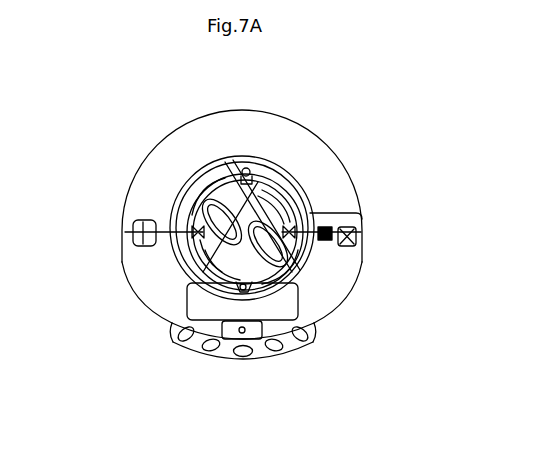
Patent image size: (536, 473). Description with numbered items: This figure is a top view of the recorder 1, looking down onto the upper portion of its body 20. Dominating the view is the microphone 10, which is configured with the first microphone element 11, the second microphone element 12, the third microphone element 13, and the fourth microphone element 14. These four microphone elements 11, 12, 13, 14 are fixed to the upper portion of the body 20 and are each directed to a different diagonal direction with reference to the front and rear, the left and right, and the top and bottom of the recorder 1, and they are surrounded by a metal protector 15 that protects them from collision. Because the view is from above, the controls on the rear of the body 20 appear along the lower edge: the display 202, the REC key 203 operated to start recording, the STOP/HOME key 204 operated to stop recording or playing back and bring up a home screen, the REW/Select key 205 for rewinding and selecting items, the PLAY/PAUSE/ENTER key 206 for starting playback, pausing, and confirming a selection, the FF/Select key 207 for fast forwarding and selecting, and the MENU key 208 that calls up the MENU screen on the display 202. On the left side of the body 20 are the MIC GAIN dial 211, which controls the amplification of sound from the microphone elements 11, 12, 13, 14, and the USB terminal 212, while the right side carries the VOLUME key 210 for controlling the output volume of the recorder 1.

The recorder 1 is at (254, 76).
The microphone 10 is at (283, 190).
The first microphone element 11 is at (200, 207).
The second microphone element 12 is at (278, 212).
The third microphone element 13 is at (210, 268).
The fourth microphone element 14 is at (262, 268).
The metal protector 15 is at (192, 180).
The body 20 is at (176, 131).
The display 202 is at (187, 295).
The REC key 203 is at (262, 324).
The STOP/HOME key 204 is at (175, 348).
The REW/Select key 205 is at (212, 353).
The PLAY/PAUSE/ENTER key 206 is at (241, 358).
The FF/Select key 207 is at (282, 354).
The MENU key 208 is at (308, 349).
The VOLUME key 210 is at (122, 258).
The MIC GAIN dial 211 is at (362, 216).
The USB terminal 212 is at (362, 245).